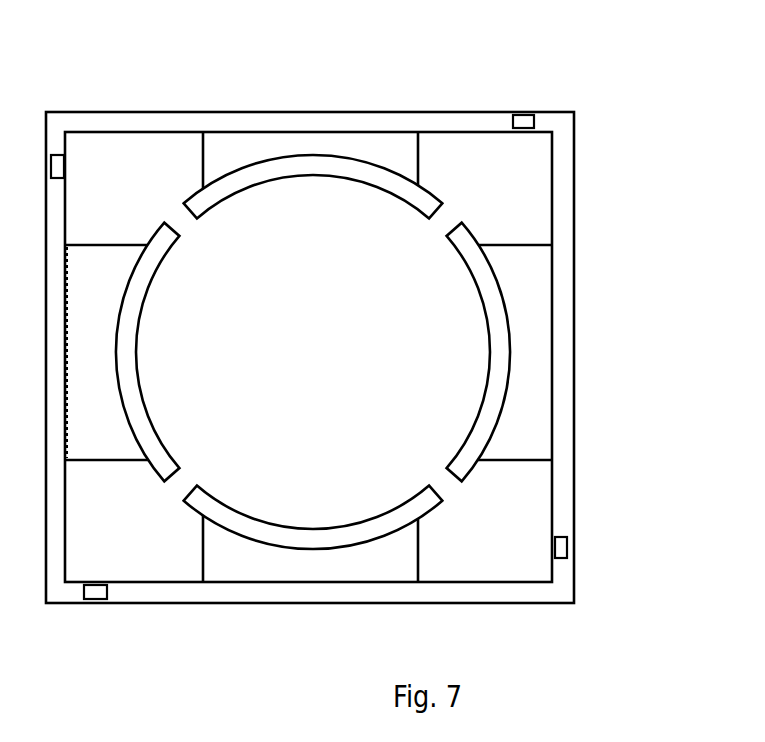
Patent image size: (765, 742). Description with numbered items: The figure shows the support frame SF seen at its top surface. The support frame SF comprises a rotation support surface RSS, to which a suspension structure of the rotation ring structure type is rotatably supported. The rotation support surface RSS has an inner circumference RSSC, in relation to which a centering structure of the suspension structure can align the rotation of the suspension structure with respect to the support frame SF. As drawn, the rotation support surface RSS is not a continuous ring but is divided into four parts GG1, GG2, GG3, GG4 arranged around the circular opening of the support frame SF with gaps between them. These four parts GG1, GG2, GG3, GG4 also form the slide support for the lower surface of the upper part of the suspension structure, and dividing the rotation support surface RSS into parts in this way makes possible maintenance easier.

The support frame SF is at (350, 110).
The inner circumference of the rotation support surface RSSC is at (313, 352).
The rotation support surface RSS is at (237, 212).
The first part of the rotation support surface GG1 is at (128, 353).
The second part of the rotation support surface GG2 is at (317, 165).
The third part of the rotation support surface GG3 is at (490, 337).
The fourth part of the rotation support surface GG4 is at (267, 530).